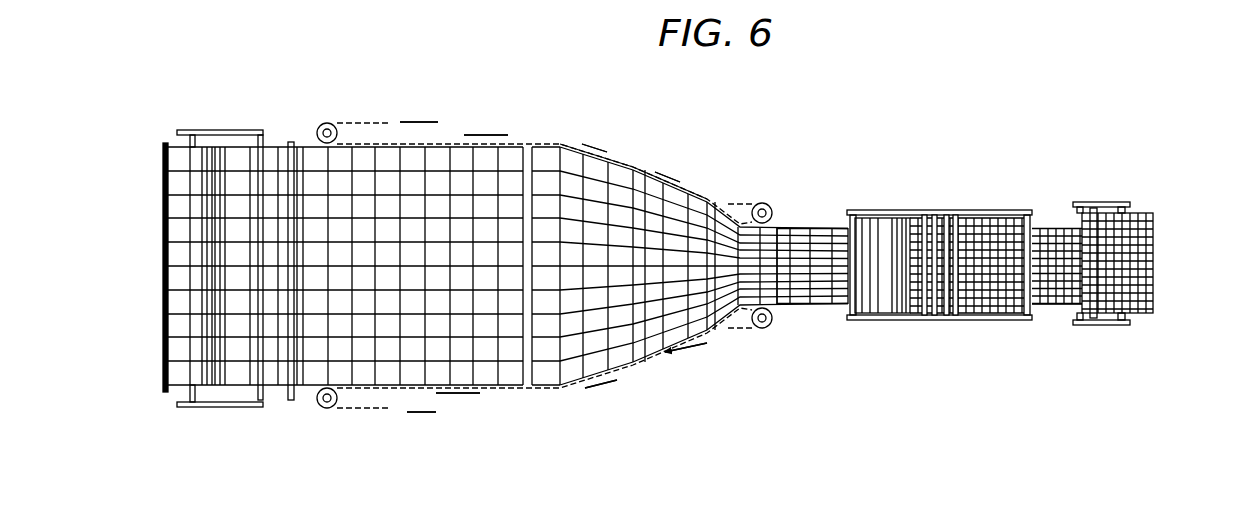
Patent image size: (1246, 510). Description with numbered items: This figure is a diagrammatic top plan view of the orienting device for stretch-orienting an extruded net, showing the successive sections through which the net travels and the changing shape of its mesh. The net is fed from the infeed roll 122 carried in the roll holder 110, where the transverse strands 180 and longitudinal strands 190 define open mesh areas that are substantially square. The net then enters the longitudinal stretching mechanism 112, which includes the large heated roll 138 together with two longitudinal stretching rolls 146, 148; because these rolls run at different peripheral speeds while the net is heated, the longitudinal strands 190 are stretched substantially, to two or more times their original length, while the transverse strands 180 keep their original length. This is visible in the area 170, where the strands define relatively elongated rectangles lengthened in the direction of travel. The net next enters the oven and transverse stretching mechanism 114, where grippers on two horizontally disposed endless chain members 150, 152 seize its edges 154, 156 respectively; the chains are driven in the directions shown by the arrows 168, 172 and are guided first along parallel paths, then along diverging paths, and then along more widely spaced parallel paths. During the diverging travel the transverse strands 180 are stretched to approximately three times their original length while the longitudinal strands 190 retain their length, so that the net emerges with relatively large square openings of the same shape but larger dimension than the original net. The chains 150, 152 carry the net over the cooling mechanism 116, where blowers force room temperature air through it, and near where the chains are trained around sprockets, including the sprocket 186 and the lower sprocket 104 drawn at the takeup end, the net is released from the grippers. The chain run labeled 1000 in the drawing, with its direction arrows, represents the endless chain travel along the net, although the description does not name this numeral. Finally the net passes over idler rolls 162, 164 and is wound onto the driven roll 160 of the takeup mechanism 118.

The lower sprocket 104 is at (325, 405).
The roll holder 110 is at (1119, 200).
The longitudinal stretching mechanism 112 is at (896, 206).
The oven and transverse stretching mechanism 114 is at (623, 380).
The cooling mechanism 116 is at (520, 398).
The takeup mechanism 118 is at (188, 122).
The infeed roll 122 is at (1152, 222).
The large heated roll 138 is at (876, 298).
The longitudinal stretching roll 146 is at (931, 222).
The longitudinal stretching roll 148 is at (951, 222).
The endless chain member 150 is at (515, 147).
The endless chain member 152 is at (630, 355).
The edge of the net 154 is at (795, 226).
The edge of the net 156 is at (797, 306).
The takeup roll 160 is at (184, 258).
The idler roll 162 is at (291, 142).
The idler roll 164 is at (258, 404).
The arrow 168 is at (762, 203).
The area 170 is at (842, 206).
The arrow 172 is at (764, 333).
The transverse strands 180 is at (668, 203).
The sprocket 186 is at (331, 124).
The longitudinal strands 190 is at (620, 190).
The conveyor chain 1000 is at (428, 162).